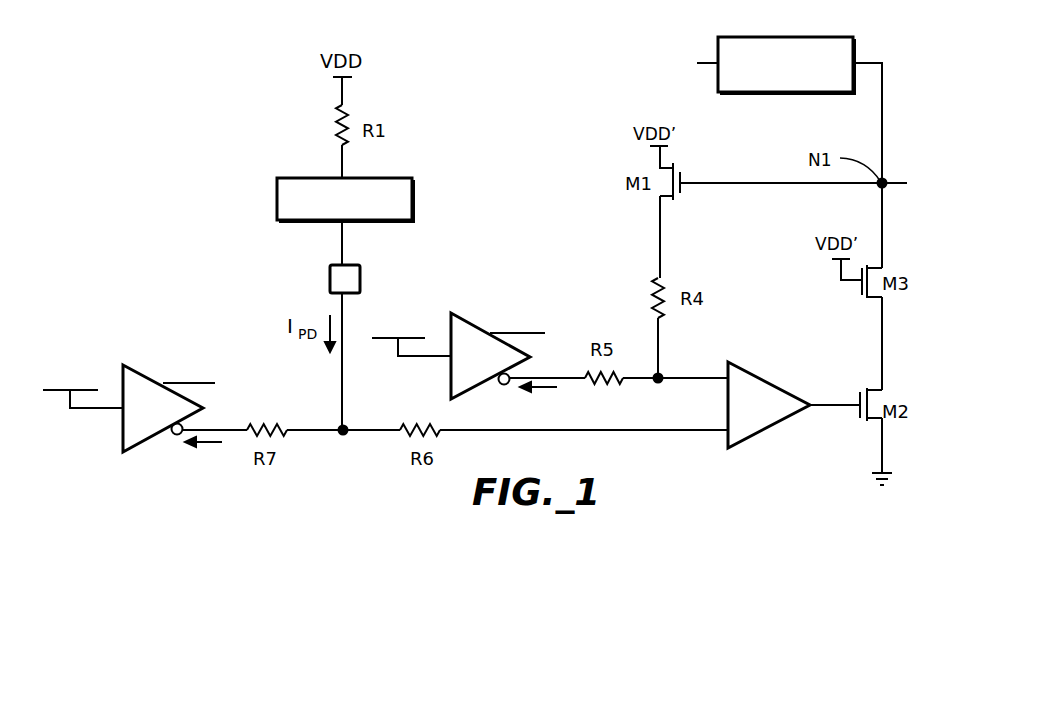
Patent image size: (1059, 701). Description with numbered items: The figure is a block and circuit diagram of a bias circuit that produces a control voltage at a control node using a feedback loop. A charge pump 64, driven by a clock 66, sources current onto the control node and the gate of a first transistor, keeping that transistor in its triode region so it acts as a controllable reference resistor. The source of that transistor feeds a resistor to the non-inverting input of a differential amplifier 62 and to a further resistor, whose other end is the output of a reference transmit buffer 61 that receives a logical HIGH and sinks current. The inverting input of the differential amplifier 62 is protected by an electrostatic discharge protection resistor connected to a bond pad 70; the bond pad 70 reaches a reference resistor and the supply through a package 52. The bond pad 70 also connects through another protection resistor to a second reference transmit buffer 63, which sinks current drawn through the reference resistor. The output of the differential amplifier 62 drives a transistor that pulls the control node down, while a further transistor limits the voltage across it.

The package 52 is at (375, 178).
The bond pad 70 is at (360, 282).
The reference transmit buffer 63 is at (148, 376).
The reference transmit buffer 61 is at (476, 322).
The differential amplifier 62 is at (760, 440).
The charge pump 64 is at (790, 37).
The clock 66 is at (648, 48).